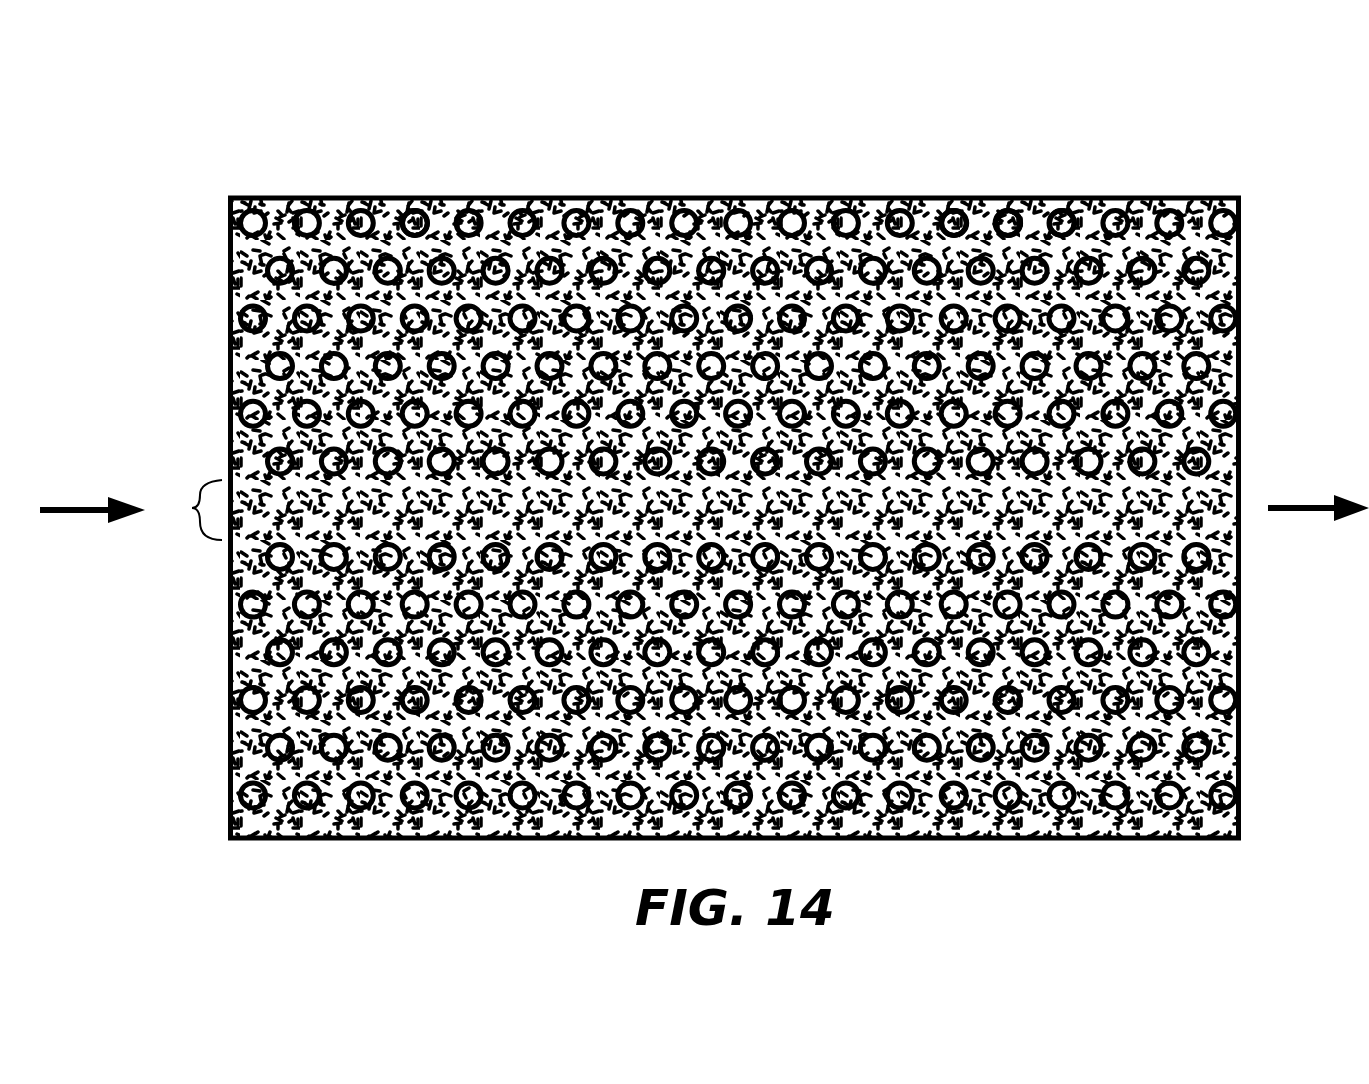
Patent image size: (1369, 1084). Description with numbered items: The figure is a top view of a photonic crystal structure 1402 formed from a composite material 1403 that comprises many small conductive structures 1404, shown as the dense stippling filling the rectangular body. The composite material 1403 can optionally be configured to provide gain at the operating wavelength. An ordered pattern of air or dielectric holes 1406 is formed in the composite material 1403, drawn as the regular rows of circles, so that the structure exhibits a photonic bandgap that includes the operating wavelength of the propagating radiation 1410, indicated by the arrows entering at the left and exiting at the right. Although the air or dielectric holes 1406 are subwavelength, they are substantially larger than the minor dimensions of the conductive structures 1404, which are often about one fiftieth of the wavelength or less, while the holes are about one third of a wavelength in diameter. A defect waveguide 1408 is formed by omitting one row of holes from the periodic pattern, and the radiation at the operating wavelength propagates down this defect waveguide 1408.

The photonic crystal structure 1402 is at (684, 454).
The composite material 1403 is at (443, 197).
The conductive structures 1404 is at (760, 197).
The air or dielectric holes 1406 is at (1042, 195).
The defect waveguide 1408 is at (192, 508).
The propagating radiation 1410 is at (80, 498).